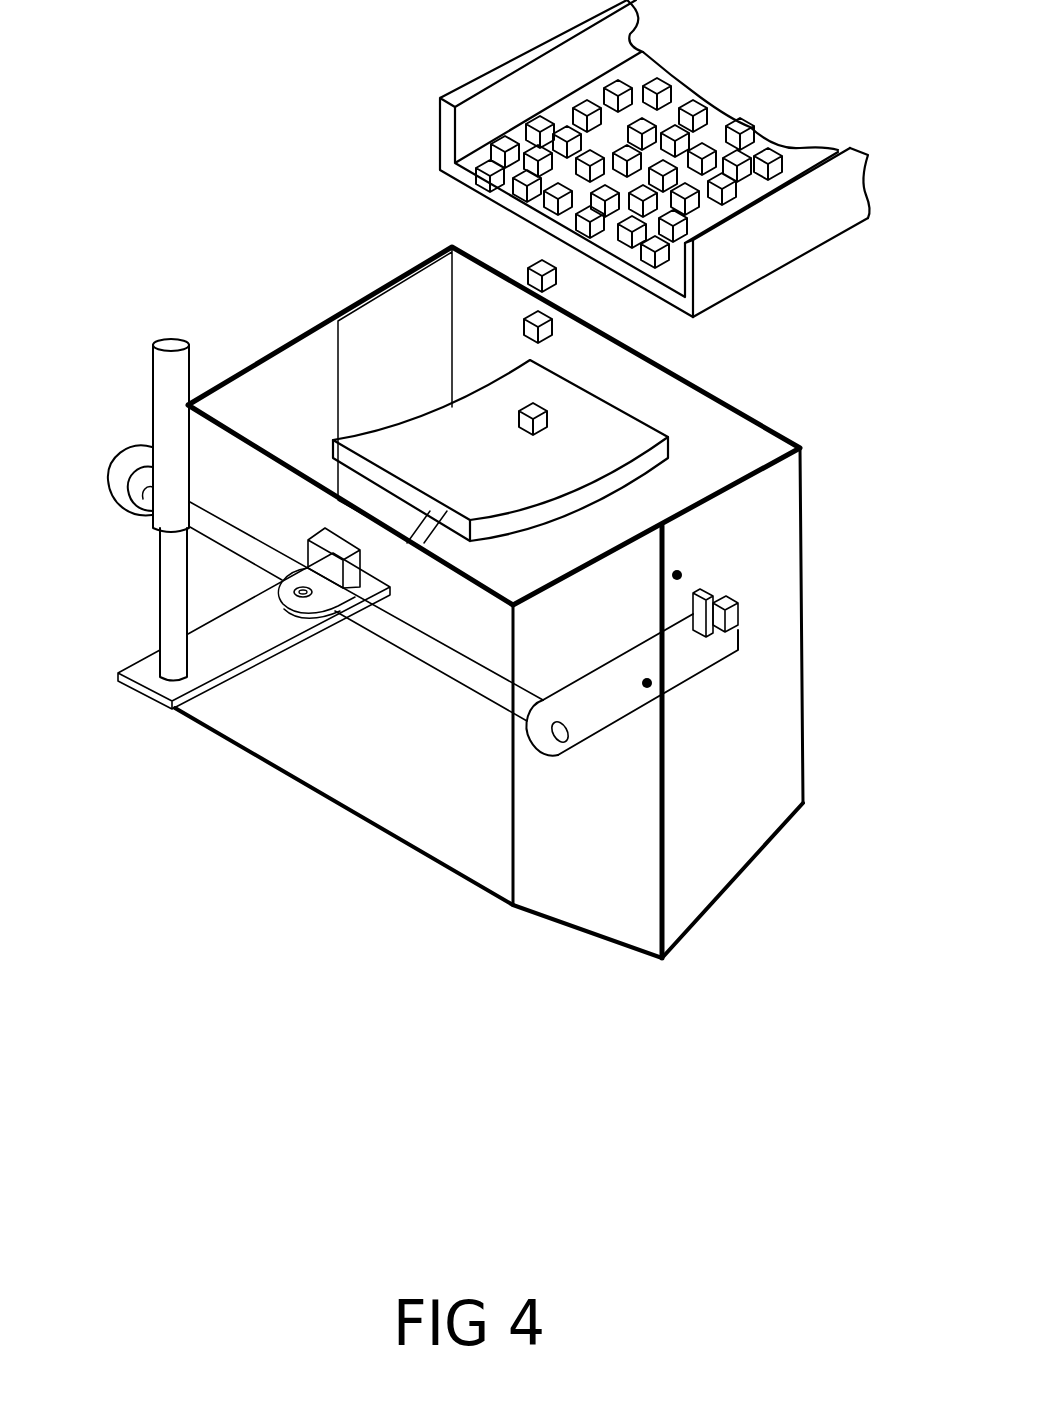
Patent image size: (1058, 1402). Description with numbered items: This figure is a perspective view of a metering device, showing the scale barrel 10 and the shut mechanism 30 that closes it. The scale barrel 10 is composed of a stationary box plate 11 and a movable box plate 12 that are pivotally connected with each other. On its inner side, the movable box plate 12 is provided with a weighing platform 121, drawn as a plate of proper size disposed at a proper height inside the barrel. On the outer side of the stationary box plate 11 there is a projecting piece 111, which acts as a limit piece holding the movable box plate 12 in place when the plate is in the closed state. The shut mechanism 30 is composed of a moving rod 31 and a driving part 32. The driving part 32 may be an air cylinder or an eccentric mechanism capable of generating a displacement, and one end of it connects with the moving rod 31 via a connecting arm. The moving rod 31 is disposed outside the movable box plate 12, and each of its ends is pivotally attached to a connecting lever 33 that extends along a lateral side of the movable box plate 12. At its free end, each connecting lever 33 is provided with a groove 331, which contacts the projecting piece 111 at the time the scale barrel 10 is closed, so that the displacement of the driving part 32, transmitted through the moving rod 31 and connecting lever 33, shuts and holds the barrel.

The scale barrel 10 is at (529, 553).
The stationary box plate 11 is at (688, 762).
The projecting piece 111 is at (713, 592).
The movable box plate 12 is at (358, 738).
The weighing platform 121 is at (600, 423).
The shut mechanism 30 is at (127, 437).
The moving rod 31 is at (383, 627).
The driving part 32 is at (178, 380).
The connecting lever 33 is at (672, 673).
The groove 331 is at (733, 625).